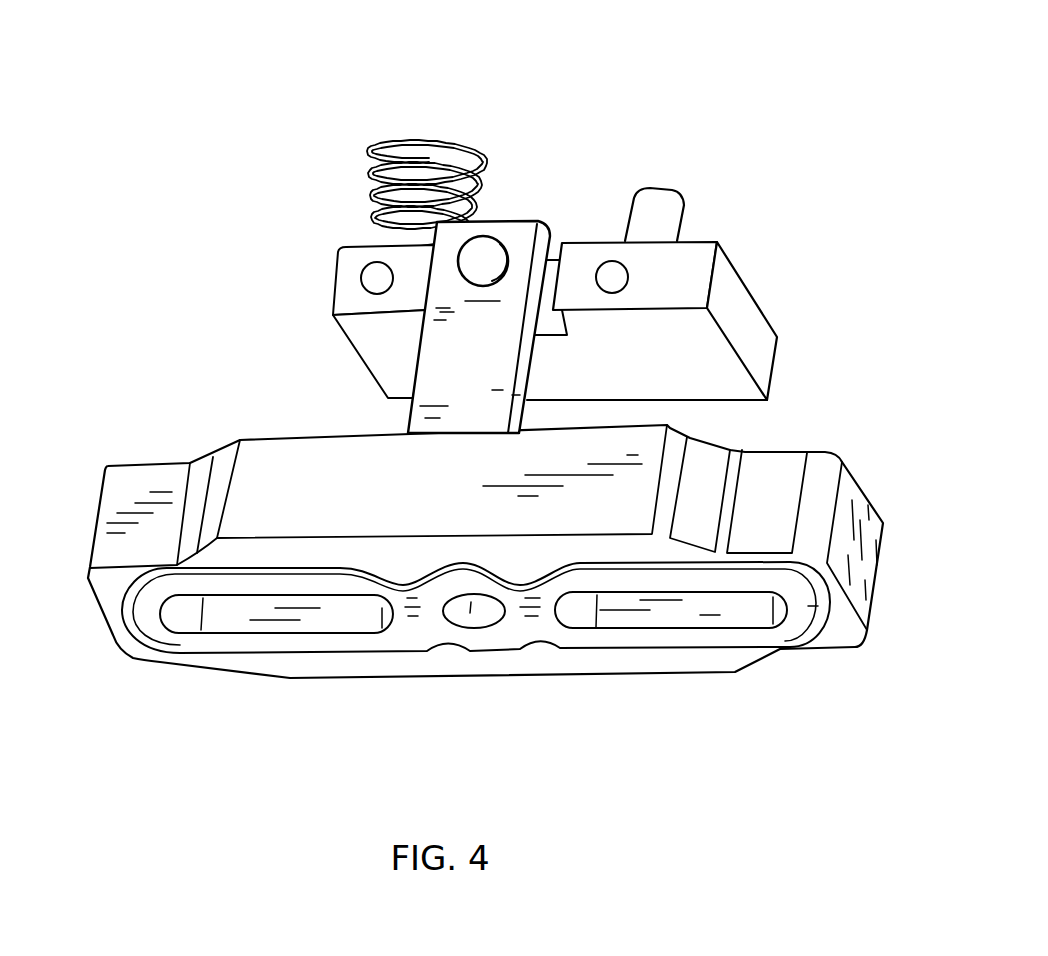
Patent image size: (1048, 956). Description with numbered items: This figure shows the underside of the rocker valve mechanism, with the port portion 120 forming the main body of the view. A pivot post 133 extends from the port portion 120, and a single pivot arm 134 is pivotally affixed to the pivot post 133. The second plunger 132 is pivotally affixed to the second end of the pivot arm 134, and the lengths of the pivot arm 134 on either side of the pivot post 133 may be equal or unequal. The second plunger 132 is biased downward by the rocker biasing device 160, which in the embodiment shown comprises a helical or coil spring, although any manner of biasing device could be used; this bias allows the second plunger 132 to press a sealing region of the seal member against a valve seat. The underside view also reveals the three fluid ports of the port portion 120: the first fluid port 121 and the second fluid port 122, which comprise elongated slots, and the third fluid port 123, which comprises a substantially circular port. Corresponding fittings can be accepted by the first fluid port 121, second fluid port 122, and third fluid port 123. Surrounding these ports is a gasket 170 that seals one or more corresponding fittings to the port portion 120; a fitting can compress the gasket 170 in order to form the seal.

The port portion 120 is at (873, 593).
The first fluid port 121 is at (247, 620).
The second fluid port 122 is at (720, 613).
The third fluid port 123 is at (481, 621).
The second plunger 132 is at (653, 187).
The pivot post 133 is at (510, 220).
The pivot arm 134 is at (713, 240).
The rocker biasing device 160 is at (410, 130).
The gasket 170 is at (388, 652).